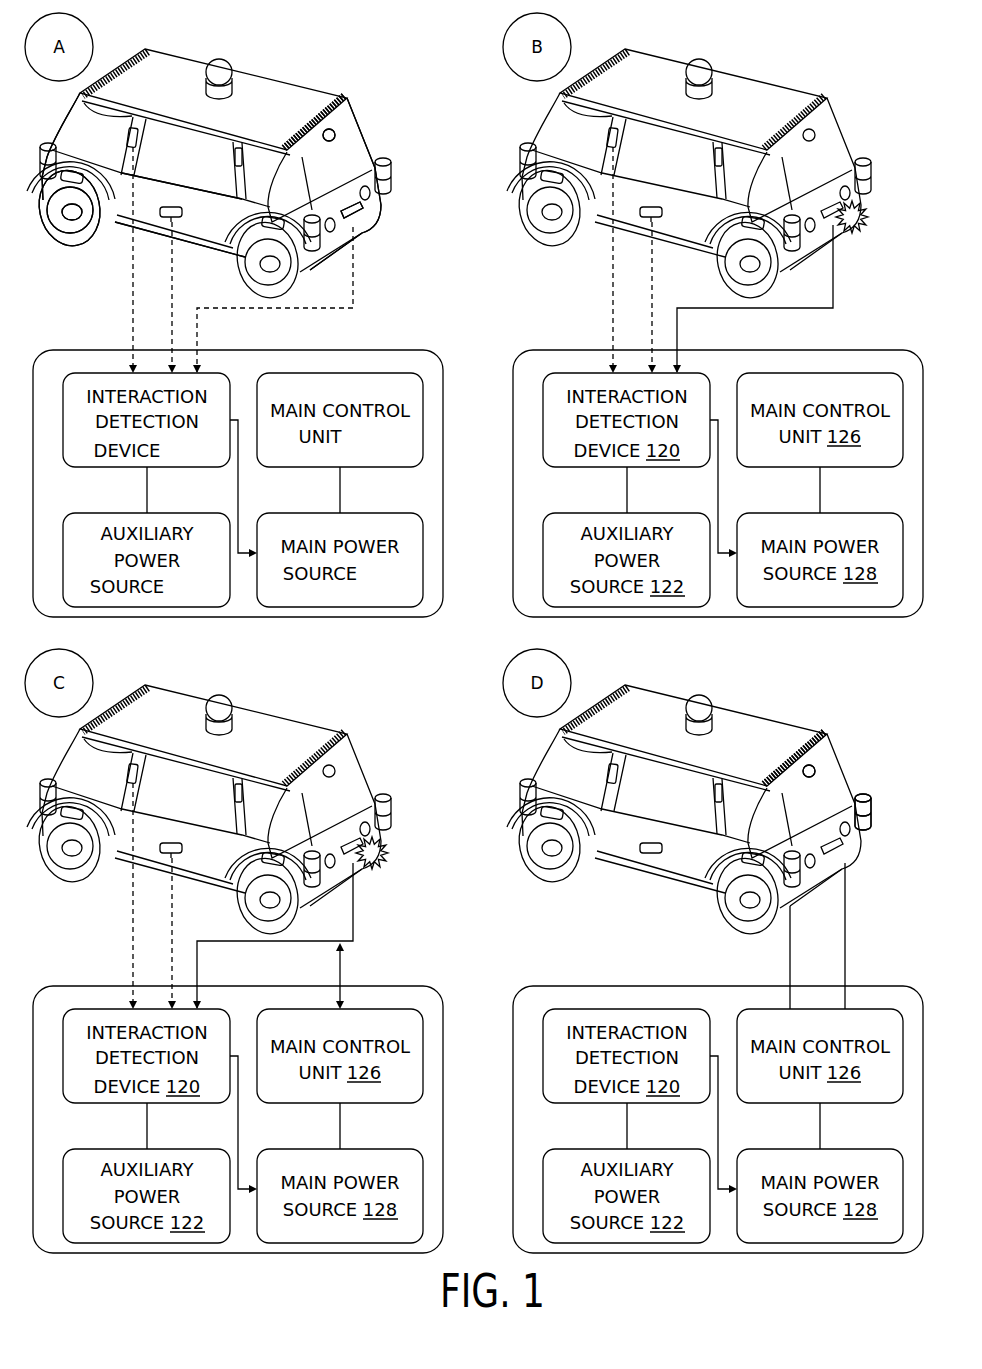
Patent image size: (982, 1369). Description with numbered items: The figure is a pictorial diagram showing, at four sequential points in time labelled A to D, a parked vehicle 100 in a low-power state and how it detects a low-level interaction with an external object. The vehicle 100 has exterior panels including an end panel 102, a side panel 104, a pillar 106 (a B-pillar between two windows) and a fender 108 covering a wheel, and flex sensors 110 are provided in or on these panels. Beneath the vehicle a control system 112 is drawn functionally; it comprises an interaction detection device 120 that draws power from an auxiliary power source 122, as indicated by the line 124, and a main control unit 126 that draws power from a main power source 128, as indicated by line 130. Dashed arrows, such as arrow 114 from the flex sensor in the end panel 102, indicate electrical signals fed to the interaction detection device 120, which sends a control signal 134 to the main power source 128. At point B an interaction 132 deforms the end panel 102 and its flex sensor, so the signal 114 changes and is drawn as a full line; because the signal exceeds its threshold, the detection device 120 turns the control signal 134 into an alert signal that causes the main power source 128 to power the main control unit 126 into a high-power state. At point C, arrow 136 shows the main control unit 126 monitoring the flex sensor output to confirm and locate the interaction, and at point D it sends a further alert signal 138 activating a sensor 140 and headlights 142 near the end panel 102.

The vehicle 100 is at (267, 80).
The end panel 102 is at (368, 165).
The side panel 104 is at (205, 232).
The pillar 106 is at (83, 101).
The fender 108 is at (47, 186).
The flex sensors 110 is at (290, 148).
The control system 112 is at (410, 349).
The arrow / electrical signal 114 is at (355, 308).
The interaction detection device 120 is at (146, 420).
The auxiliary power source 122 is at (146, 560).
The line 124 is at (135, 492).
The main control unit 126 is at (340, 420).
The main power source 128 is at (340, 560).
The line 130 is at (333, 492).
The interaction 132 is at (858, 232).
The control signal / alert signal 134 is at (238, 492).
The arrow 136 is at (342, 975).
The further alert signal 138 is at (846, 908).
The sensor 140 is at (836, 754).
The headlights 142 is at (856, 800).